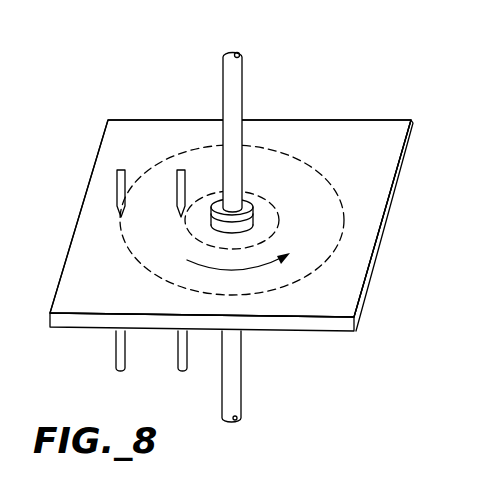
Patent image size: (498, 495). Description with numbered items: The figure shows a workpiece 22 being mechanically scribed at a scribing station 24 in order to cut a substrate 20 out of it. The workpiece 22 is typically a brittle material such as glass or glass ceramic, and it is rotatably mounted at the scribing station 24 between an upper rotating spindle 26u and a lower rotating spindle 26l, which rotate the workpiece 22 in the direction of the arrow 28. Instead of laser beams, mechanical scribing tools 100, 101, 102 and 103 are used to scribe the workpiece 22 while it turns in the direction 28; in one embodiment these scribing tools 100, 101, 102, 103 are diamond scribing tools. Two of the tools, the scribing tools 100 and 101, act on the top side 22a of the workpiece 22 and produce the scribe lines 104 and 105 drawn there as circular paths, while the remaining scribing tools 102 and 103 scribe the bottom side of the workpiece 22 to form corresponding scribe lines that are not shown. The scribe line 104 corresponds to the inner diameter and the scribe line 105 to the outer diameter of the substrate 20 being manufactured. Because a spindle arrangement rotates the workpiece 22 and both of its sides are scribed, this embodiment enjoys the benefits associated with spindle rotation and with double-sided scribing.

The scribing station 24 is at (112, 50).
The substrate 20 is at (278, 160).
The workpiece 22 is at (410, 150).
The top side of workpiece 22a is at (362, 133).
The upper rotating spindle 26u is at (223, 88).
The lower rotating spindle 26l is at (241, 362).
The direction of rotation arrow 28 is at (258, 268).
The mechanical scribing tool 100 is at (113, 185).
The mechanical scribing tool 101 is at (177, 182).
The mechanical scribing tool 102 is at (112, 350).
The mechanical scribing tool 103 is at (173, 360).
The scribe line 104 is at (268, 193).
The scribe line 105 is at (338, 237).